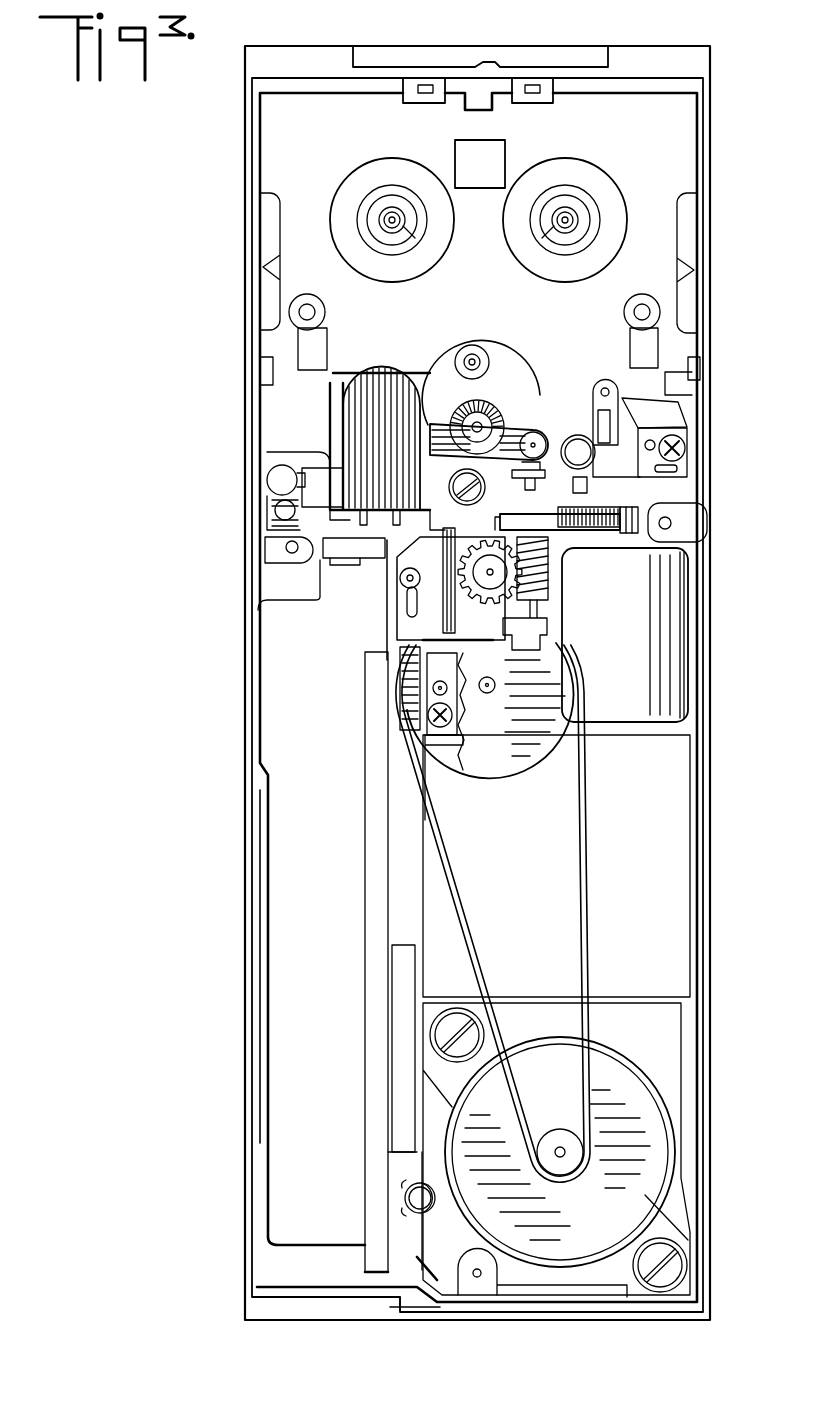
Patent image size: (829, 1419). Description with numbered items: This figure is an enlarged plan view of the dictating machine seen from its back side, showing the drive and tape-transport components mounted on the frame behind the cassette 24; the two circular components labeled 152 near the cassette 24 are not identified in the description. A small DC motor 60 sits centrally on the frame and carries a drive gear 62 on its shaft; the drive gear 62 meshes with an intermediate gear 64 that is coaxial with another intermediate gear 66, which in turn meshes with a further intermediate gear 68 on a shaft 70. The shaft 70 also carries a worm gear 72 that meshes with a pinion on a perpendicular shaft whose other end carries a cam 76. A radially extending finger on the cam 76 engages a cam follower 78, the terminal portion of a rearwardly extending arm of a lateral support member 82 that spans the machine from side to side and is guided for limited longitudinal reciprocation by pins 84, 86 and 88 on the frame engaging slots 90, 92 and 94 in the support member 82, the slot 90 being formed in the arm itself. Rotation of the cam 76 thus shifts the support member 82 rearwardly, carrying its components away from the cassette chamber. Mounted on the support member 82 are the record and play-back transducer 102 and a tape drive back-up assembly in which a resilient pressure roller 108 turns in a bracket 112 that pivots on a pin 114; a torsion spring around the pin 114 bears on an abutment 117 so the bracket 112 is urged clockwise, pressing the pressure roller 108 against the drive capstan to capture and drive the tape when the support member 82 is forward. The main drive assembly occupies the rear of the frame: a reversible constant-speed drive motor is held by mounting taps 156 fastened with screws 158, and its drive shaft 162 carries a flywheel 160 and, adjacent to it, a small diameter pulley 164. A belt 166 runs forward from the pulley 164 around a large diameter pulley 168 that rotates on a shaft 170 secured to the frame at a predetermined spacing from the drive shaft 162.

The cassette 24 is at (673, 160).
The reel hubs 152 is at (505, 243).
The transducer 102 is at (343, 423).
The bracket 112 is at (425, 373).
The resilient pressure roller 108 is at (490, 402).
The pin 114 is at (527, 433).
The abutment 117 is at (528, 466).
The pin 88 is at (580, 436).
The slot 94 is at (585, 486).
The drive gear 62 is at (710, 512).
The intermediate gear 64 is at (562, 508).
The intermediate gear 66 is at (598, 530).
The intermediate gear 68 is at (500, 522).
The pin 86 is at (267, 472).
The slot 92 is at (275, 512).
The lateral support member 82 is at (267, 528).
The cam 76 is at (420, 594).
The pin 84 is at (398, 582).
The slot 90 is at (406, 602).
The cam follower 78 is at (495, 655).
The worm gear 72 is at (548, 588).
The shaft 70 is at (540, 610).
The small DC motor 60 is at (690, 580).
The shaft 170 is at (487, 693).
The large diameter pulley 168 is at (535, 748).
The belt 166 is at (584, 873).
The mounting taps 156 is at (667, 1225).
The screws 158 is at (677, 1265).
The fly-wheel 160 is at (607, 1152).
The drive shaft 162 is at (537, 1197).
The small diameter pulley 164 is at (553, 1123).